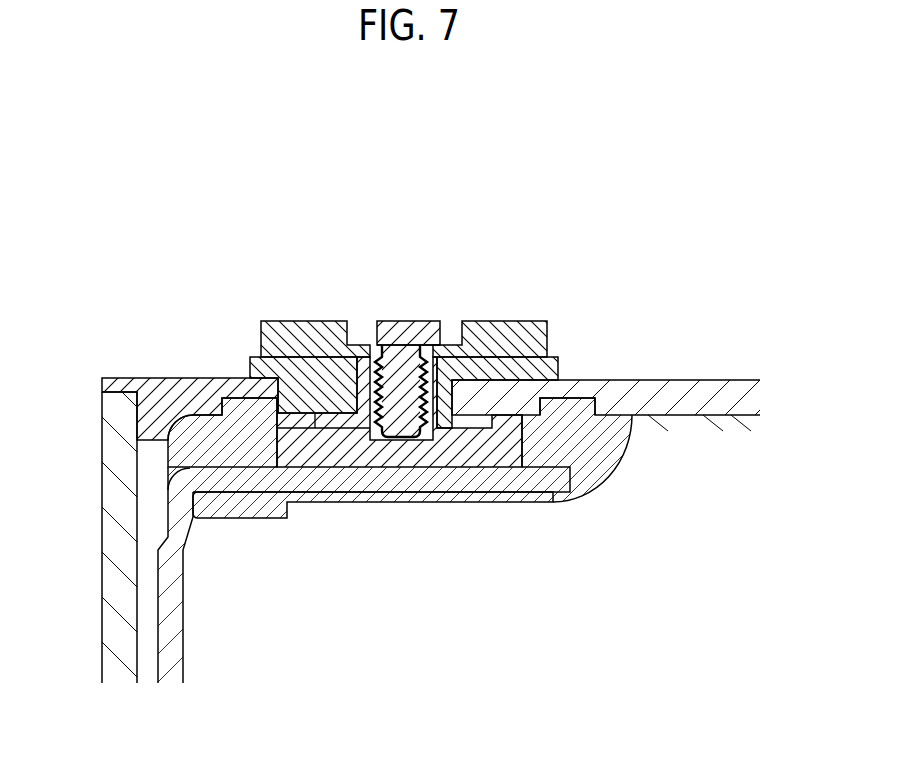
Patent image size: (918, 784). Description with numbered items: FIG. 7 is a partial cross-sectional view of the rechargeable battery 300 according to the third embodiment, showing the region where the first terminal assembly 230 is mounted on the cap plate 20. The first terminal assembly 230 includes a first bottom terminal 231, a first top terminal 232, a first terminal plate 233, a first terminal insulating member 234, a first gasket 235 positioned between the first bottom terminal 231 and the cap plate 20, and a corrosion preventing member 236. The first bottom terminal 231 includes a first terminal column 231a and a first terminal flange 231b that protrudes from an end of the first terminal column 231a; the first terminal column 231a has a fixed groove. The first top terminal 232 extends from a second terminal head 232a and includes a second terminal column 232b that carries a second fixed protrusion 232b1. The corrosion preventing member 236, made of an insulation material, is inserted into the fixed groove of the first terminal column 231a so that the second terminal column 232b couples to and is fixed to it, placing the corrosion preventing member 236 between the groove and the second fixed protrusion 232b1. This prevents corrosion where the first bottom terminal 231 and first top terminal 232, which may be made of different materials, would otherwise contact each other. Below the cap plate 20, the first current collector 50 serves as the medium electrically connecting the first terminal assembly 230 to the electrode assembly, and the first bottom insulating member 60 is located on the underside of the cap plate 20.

The display device 300 is at (152, 155).
The cap plate 20 is at (693, 392).
The first current collector 50 is at (167, 600).
The first bottom insulating member 60 is at (169, 455).
The first terminal assembly 230 is at (724, 502).
The first bottom terminal 231 is at (475, 600).
The first terminal column 231a is at (442, 430).
The first terminal flange 231b is at (340, 440).
The first top terminal 232 is at (422, 192).
The second terminal head 232a is at (365, 333).
The second terminal column 232b is at (402, 375).
The second fixed protrusion 232b1 is at (440, 338).
The first terminal plate 233 is at (502, 335).
The first terminal insulating member 234 is at (547, 370).
The first gasket 235 is at (348, 398).
The corrosion preventing member 236 is at (325, 494).